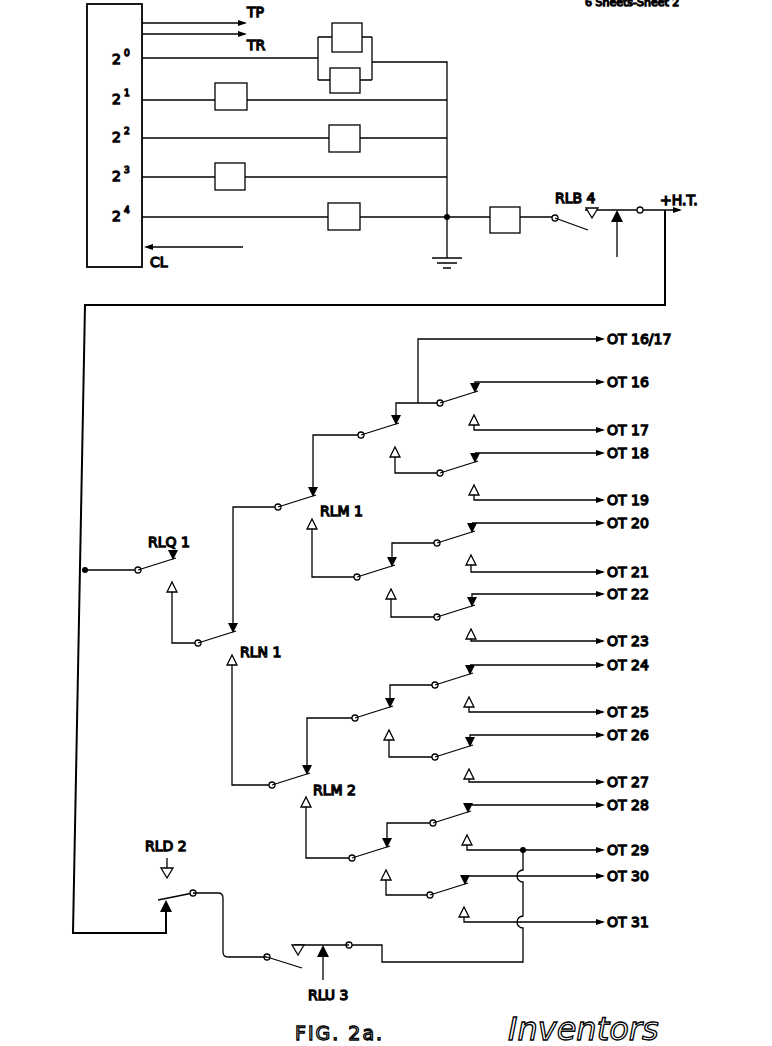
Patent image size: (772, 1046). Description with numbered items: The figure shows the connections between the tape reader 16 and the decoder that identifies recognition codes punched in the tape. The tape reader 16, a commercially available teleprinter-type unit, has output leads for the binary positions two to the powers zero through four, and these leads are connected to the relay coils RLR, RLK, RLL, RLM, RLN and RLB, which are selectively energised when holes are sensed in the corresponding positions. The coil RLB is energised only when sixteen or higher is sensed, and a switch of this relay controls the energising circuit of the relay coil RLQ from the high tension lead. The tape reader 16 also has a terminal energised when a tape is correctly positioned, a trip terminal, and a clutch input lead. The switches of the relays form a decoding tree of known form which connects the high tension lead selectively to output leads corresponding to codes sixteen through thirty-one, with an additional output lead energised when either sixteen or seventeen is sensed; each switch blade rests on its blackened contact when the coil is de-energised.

The tape reader 16 is at (114, 135).
The relay coil RLR is at (352, 37).
The relay coil RLK is at (355, 88).
The relay coil RLL is at (226, 95).
The relay coil RLM is at (338, 140).
The relay coil RLN is at (223, 176).
The relay coil RLB is at (338, 218).
The relay coil RLQ is at (503, 206).